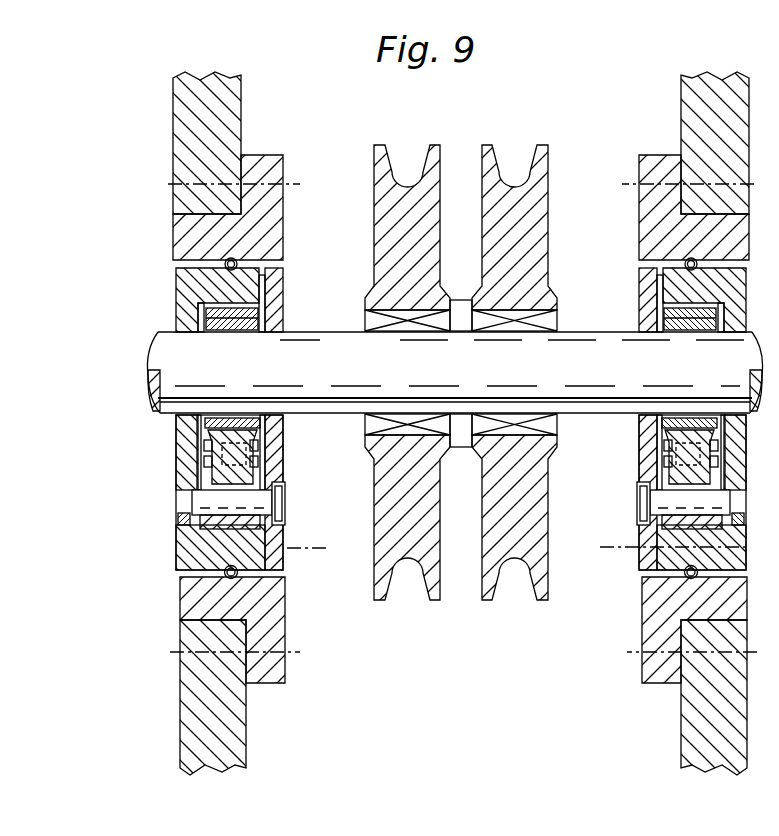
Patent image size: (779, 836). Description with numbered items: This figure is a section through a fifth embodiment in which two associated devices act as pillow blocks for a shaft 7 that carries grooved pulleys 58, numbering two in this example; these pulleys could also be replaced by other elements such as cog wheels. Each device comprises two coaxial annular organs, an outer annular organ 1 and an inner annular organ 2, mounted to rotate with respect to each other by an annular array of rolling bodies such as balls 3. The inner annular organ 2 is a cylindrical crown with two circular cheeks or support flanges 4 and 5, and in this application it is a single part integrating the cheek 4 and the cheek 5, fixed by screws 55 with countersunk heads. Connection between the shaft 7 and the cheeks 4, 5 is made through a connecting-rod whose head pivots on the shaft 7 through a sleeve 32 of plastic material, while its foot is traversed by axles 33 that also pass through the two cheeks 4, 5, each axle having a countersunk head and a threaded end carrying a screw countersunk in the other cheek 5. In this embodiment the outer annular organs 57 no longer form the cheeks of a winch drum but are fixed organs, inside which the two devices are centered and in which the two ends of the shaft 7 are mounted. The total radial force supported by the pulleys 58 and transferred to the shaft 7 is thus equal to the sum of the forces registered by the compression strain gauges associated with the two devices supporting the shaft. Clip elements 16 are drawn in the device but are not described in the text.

The outer annular organ 57 is at (228, 118).
The outer annular organ 1 is at (277, 213).
The balls 3 is at (226, 259).
The inner annular organ 2 is at (196, 291).
The cheek 5 is at (277, 287).
The cheek 4 is at (184, 322).
The sleeve 32 is at (248, 331).
The shaft 7 is at (580, 352).
The grooved pulleys 58 is at (385, 180).
The retaining clip 16 is at (210, 464).
The axles 33 is at (205, 500).
The screws 55 is at (318, 550).